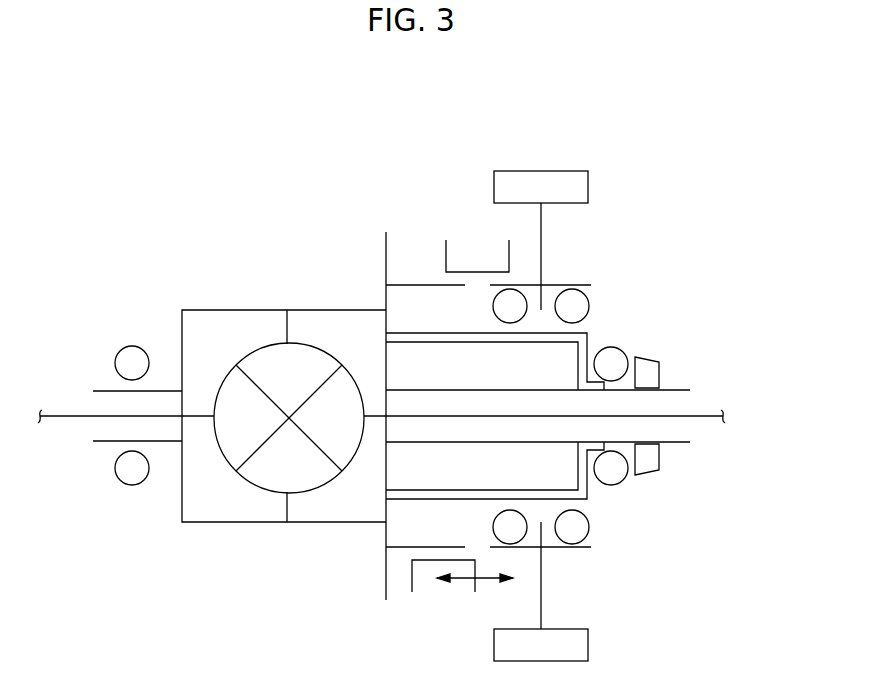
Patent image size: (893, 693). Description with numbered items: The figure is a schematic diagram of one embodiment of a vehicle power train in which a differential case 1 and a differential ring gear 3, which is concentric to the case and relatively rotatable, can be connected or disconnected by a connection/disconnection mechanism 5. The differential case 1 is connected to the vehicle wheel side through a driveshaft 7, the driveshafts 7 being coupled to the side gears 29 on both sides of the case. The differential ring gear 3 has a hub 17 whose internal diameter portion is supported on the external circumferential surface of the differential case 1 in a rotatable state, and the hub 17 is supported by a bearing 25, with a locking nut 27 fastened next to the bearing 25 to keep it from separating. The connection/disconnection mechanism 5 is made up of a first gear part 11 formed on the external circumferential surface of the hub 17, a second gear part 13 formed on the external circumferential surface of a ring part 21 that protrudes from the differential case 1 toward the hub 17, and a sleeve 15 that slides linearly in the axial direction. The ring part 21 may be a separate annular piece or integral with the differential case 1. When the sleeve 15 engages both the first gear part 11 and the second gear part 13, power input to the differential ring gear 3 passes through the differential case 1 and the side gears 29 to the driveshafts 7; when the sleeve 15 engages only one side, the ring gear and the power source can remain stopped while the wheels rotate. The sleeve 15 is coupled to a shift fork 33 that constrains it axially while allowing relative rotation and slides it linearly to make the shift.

The differential case 1 is at (218, 309).
The differential ring gear 3 is at (562, 178).
The connection/disconnection mechanism 5 is at (503, 110).
The driveshaft 7 is at (73, 413).
The first gear part 11 is at (525, 285).
The second gear part 13 is at (422, 285).
The sleeve 15 is at (480, 270).
The hub 17 is at (575, 285).
The ring part 21 is at (430, 548).
The bearing 25 is at (510, 306).
The locking nut 27 is at (647, 476).
The side gears 29 is at (325, 425).
The shift fork 33 is at (412, 575).